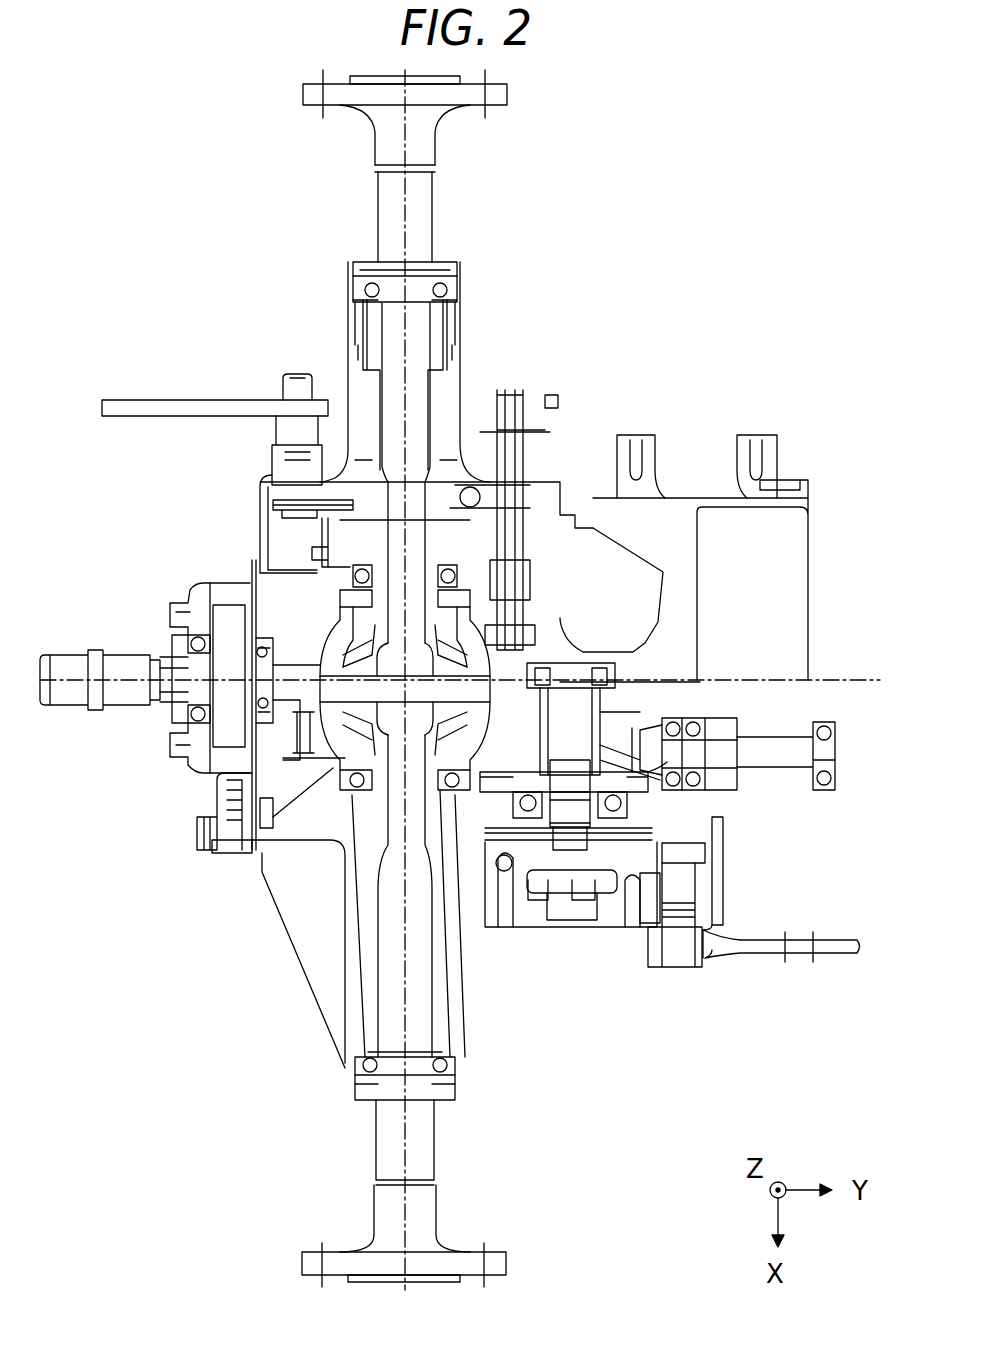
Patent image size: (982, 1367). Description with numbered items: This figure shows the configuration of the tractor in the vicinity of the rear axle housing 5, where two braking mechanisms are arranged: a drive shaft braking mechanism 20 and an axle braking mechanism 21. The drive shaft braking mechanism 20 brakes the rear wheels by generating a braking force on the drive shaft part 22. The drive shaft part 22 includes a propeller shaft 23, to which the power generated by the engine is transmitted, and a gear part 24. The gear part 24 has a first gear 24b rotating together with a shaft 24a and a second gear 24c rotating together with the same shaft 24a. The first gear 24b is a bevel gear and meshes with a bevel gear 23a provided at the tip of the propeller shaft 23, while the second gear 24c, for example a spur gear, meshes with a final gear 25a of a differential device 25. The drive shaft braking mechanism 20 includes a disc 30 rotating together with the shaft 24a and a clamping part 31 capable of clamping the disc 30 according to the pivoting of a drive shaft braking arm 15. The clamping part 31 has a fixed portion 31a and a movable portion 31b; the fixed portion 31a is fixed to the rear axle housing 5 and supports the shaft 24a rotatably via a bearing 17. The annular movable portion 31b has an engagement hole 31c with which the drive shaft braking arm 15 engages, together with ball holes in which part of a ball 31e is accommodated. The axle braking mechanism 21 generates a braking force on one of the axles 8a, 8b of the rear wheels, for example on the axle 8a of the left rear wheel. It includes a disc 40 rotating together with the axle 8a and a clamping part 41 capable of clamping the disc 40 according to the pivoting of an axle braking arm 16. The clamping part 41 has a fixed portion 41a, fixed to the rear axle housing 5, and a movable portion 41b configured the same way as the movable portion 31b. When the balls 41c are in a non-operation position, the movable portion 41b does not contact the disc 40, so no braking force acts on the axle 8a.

The rear axle housing 5 is at (452, 1063).
The axle 8a is at (388, 390).
The axle 8b is at (383, 997).
The drive shaft braking arm 15 is at (763, 963).
The axle braking arm 16 is at (180, 393).
The bearing 17 is at (660, 860).
The drive shaft braking mechanism 20 is at (690, 827).
The axle braking mechanism 21 is at (318, 530).
The drive shaft part 22 is at (655, 700).
The propeller shaft 23 is at (785, 760).
The bevel gear 23a is at (665, 720).
The gear part 24 is at (595, 728).
The shaft 24a is at (570, 838).
The first gear 24b is at (640, 780).
The second gear 24c is at (600, 700).
The differential device 25 is at (302, 629).
The final gear 25a is at (560, 700).
The disc 30 is at (485, 890).
The clamping part 31 is at (600, 1050).
The fixed portion 31a is at (532, 905).
The movable portion 31b is at (588, 905).
The engagement hole 31c is at (600, 855).
The ball 31e is at (515, 825).
The disc 40 is at (482, 498).
The clamping part 41 is at (480, 258).
The fixed portion 41a is at (440, 520).
The movable portion 41b is at (450, 540).
The balls 41c is at (500, 500).